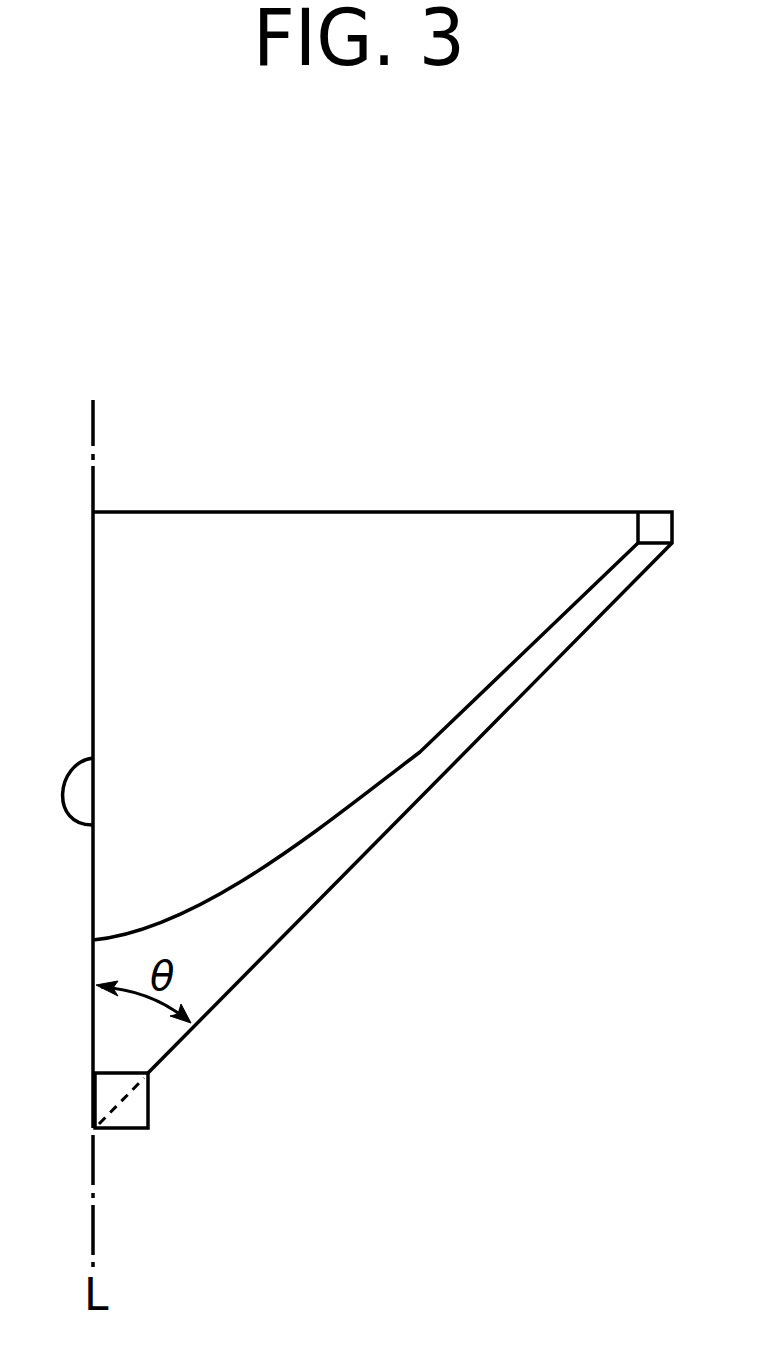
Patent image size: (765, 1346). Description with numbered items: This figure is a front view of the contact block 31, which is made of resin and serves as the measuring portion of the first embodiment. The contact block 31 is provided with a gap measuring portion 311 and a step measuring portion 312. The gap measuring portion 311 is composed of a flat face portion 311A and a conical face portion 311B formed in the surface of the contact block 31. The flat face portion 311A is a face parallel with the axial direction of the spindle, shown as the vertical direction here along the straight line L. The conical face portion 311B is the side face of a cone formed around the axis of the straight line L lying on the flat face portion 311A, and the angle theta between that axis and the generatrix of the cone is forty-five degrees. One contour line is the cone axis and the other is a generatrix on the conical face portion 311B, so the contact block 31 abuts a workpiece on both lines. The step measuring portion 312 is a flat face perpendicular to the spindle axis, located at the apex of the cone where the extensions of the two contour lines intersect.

The contact block 31 is at (453, 431).
The gap measuring portion 311 is at (349, 842).
The flat face portion 311A is at (93, 758).
The conical face portion 311B is at (313, 906).
The step measuring portion 312 is at (132, 1128).